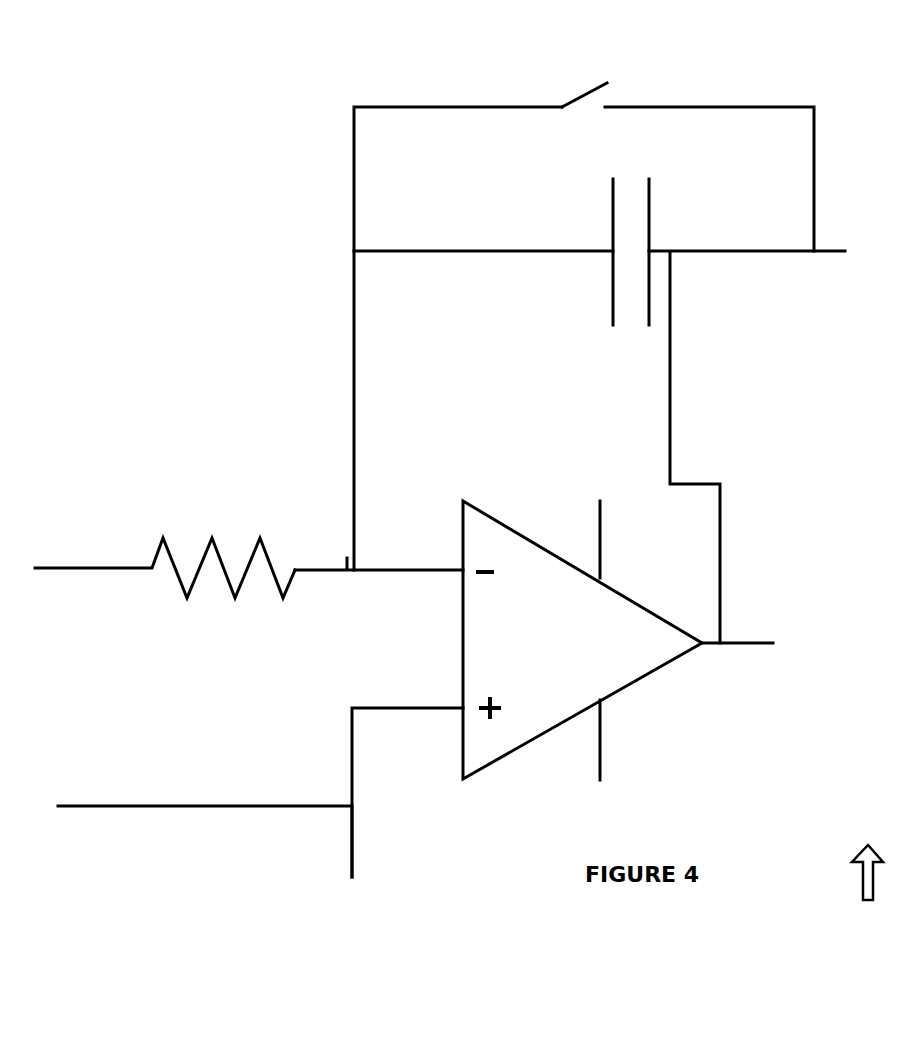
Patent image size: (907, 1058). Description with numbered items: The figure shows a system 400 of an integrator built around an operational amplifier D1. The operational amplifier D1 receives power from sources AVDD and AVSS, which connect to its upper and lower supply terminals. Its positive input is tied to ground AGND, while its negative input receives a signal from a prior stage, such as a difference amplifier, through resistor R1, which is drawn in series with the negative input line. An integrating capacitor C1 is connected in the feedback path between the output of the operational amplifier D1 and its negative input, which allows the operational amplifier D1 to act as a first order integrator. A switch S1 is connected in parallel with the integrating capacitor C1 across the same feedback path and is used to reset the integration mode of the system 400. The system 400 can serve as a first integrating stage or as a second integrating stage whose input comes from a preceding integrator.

The switch S1 is at (580, 82).
The integrating capacitor C1 is at (594, 252).
The resistor R1 is at (165, 555).
The operational amplifier D1 is at (582, 640).
The power source AVDD is at (566, 519).
The power source AVSS is at (584, 757).
The ground AGND is at (392, 841).
The system of an integrator 400 is at (843, 872).